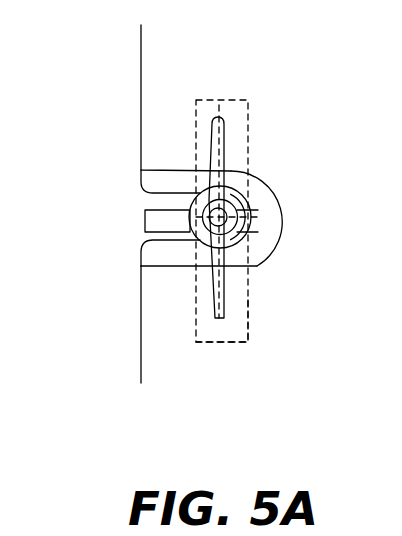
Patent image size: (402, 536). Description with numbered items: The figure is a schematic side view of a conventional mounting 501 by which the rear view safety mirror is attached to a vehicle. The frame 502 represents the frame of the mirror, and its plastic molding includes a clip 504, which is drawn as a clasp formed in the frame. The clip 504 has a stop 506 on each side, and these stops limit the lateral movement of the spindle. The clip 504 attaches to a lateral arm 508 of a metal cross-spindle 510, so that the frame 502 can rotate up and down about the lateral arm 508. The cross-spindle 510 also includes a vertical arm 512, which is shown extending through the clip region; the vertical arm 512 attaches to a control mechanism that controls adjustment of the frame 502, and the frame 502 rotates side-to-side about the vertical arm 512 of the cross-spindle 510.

The conventional mounting 501 is at (198, 93).
The frame 502 is at (158, 22).
The clip 504 is at (266, 257).
The stop 506 is at (197, 218).
The lateral arm 508 is at (250, 214).
The cross-spindle 510 is at (248, 332).
The vertical arm 512 is at (210, 316).